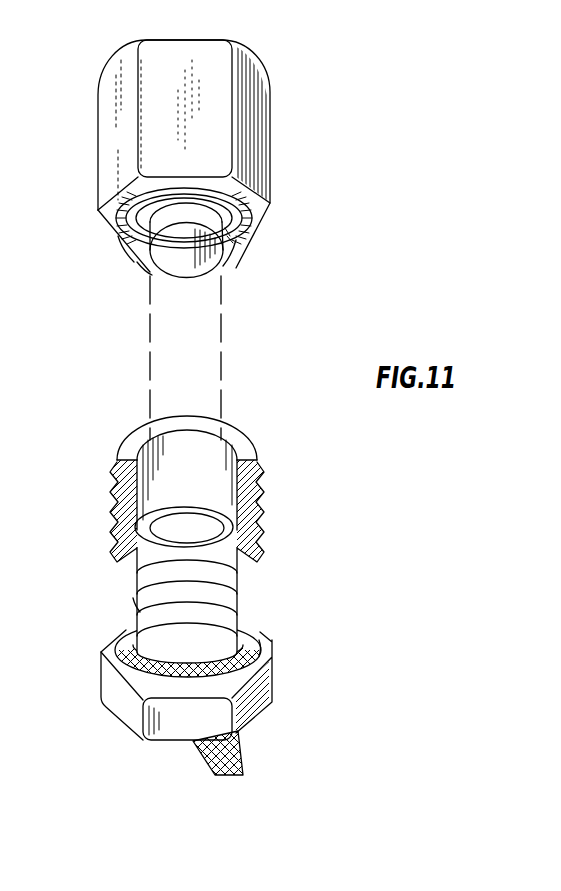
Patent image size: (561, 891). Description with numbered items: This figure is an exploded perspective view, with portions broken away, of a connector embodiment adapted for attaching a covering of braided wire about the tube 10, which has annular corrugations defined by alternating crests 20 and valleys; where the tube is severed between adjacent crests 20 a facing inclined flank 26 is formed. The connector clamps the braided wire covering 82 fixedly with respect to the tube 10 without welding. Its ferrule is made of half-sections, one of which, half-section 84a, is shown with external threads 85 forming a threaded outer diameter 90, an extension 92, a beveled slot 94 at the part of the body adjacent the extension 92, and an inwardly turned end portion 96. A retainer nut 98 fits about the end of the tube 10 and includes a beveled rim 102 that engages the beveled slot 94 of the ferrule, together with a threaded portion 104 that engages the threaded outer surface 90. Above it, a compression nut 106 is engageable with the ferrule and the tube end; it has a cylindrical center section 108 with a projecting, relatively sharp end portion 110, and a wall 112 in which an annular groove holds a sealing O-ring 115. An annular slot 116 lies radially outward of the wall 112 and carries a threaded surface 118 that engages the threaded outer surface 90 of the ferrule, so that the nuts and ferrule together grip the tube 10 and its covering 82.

The tube 10 is at (126, 600).
The crests 20 is at (136, 605).
The inclined flank 26 is at (215, 550).
The braided wire covering 82 is at (250, 752).
The ferrule half-section 84a is at (229, 546).
The external threads 85 is at (258, 496).
The threaded outer diameter 90 is at (258, 525).
The extension 92 is at (250, 591).
The beveled slot 94 is at (258, 571).
The inwardly turned end portion 96 is at (246, 611).
The retainer nut 98 is at (272, 648).
The beveled rim 102 is at (100, 652).
The threaded portion 104 is at (262, 641).
The compression nut 106 is at (258, 133).
The cylindrical center section 108 is at (193, 272).
The sharp end portion 110 is at (240, 266).
The wall 112 is at (126, 256).
The O-ring 115 is at (136, 270).
The annular slot 116 is at (258, 210).
The threaded surface 118 is at (245, 258).